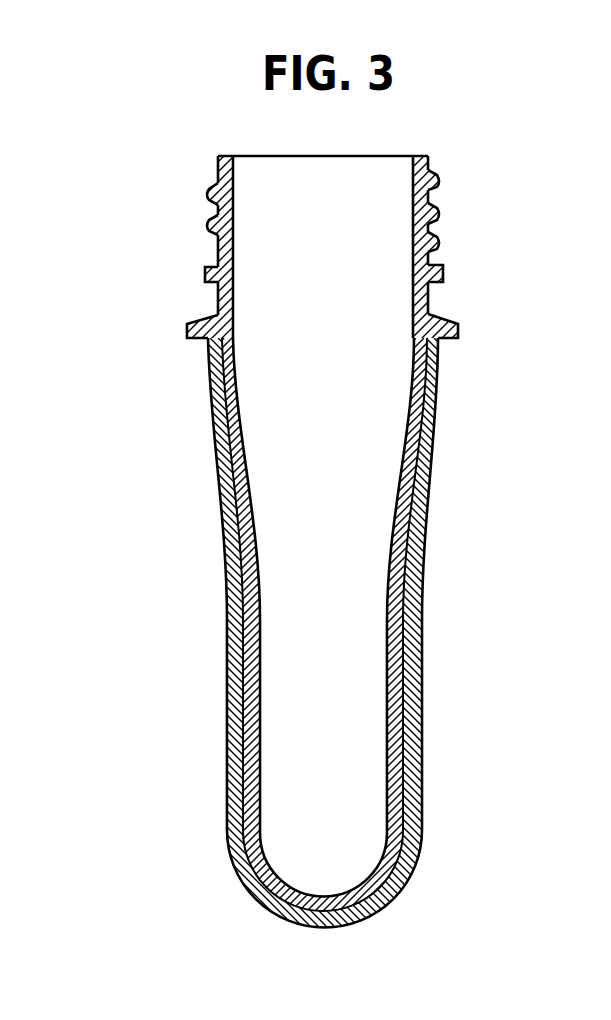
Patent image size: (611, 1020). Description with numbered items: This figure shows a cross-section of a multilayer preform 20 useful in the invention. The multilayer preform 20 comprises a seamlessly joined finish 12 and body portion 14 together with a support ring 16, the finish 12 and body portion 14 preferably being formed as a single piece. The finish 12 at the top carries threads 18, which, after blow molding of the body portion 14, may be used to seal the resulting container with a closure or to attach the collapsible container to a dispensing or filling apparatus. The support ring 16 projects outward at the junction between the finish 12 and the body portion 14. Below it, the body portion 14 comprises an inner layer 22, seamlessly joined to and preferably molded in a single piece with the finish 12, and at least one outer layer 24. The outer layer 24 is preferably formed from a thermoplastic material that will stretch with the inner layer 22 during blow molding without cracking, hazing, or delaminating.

The finish 12 is at (310, 245).
The body portion 14 is at (305, 634).
The support ring 16 is at (458, 327).
The threads 18 is at (437, 211).
The multilayer preform 20 is at (305, 633).
The inner layer 22 is at (393, 484).
The outer layer 24 is at (422, 706).